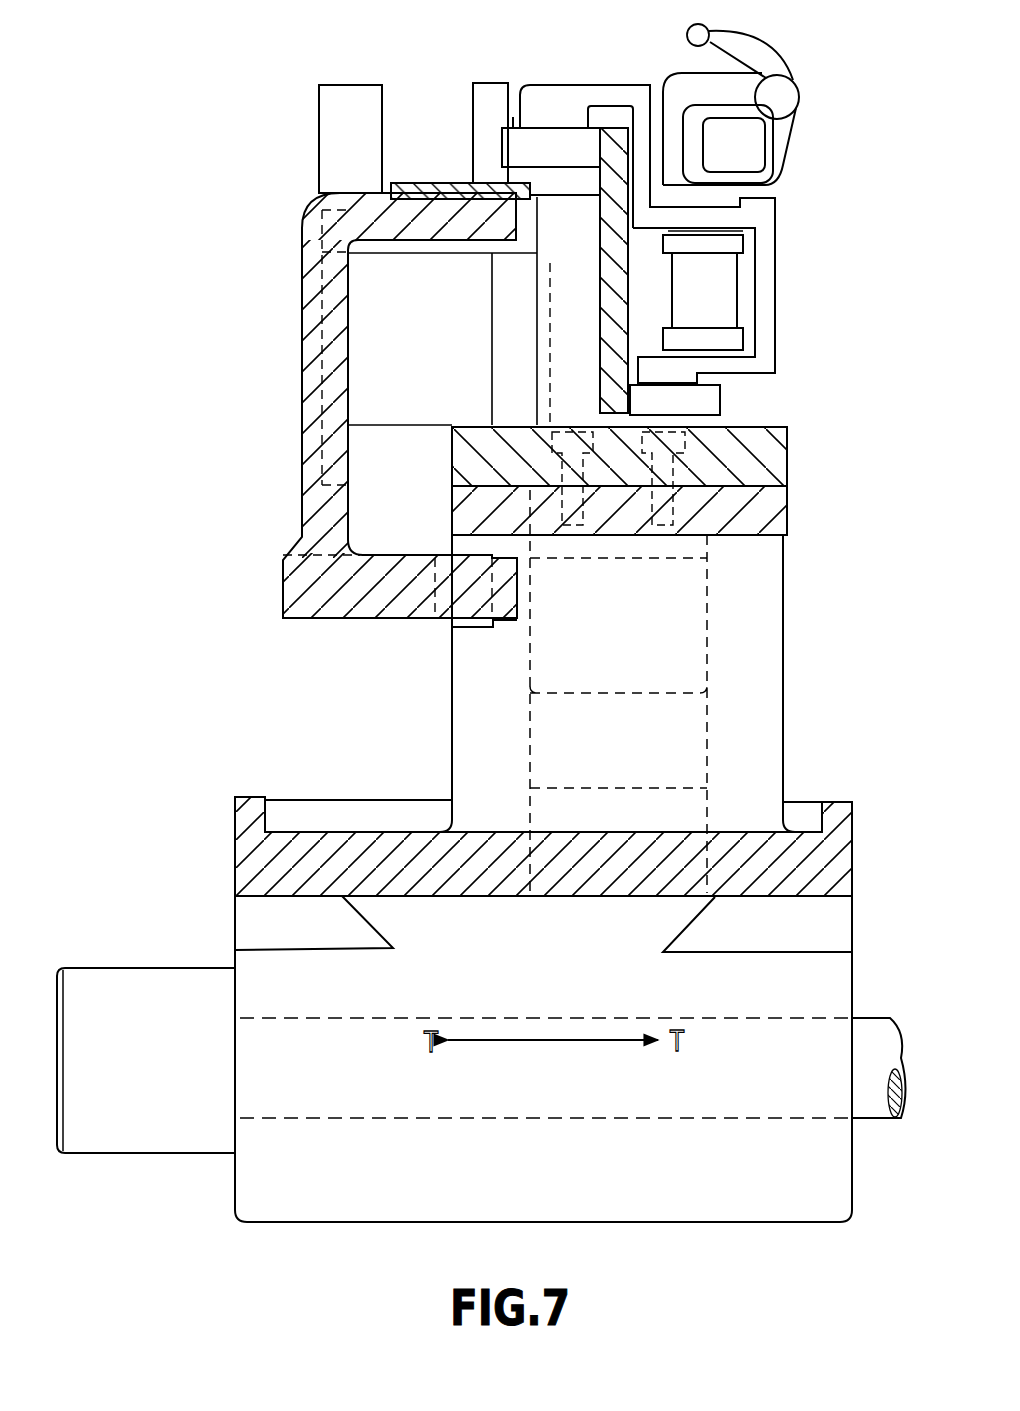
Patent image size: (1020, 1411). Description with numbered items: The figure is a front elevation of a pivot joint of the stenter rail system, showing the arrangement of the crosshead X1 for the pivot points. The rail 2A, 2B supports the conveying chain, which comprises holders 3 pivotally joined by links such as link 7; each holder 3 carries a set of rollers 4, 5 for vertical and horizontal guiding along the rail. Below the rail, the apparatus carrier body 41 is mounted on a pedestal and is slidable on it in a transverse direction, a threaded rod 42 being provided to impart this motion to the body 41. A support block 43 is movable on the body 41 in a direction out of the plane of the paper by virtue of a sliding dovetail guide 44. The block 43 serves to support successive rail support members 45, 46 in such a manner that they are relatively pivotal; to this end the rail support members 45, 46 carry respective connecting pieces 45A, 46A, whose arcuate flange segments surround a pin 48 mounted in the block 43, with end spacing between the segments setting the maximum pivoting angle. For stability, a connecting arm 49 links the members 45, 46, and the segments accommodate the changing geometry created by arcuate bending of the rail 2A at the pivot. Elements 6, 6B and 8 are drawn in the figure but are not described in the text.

The crosshead X1 is at (340, 458).
The connecting arm 49 is at (307, 312).
The rail 2B is at (428, 188).
The roller 4 is at (487, 90).
The roller 5 is at (548, 140).
The rail 2A is at (607, 318).
The holder 3 is at (768, 290).
The link 7 is at (735, 244).
The lower flange of coil 8 is at (740, 345).
The seal member 6 is at (680, 100).
The seal lip 6B is at (780, 150).
The rail support member 45 is at (642, 436).
The rail support member 46 is at (504, 359).
The connecting piece 45A is at (692, 514).
The connecting piece 46A is at (773, 507).
The pin 48 is at (626, 613).
The support block 43 is at (770, 790).
The sliding dovetail guide 44 is at (693, 918).
The apparatus carrier body 41 is at (838, 1173).
The threaded rod 42 is at (107, 977).